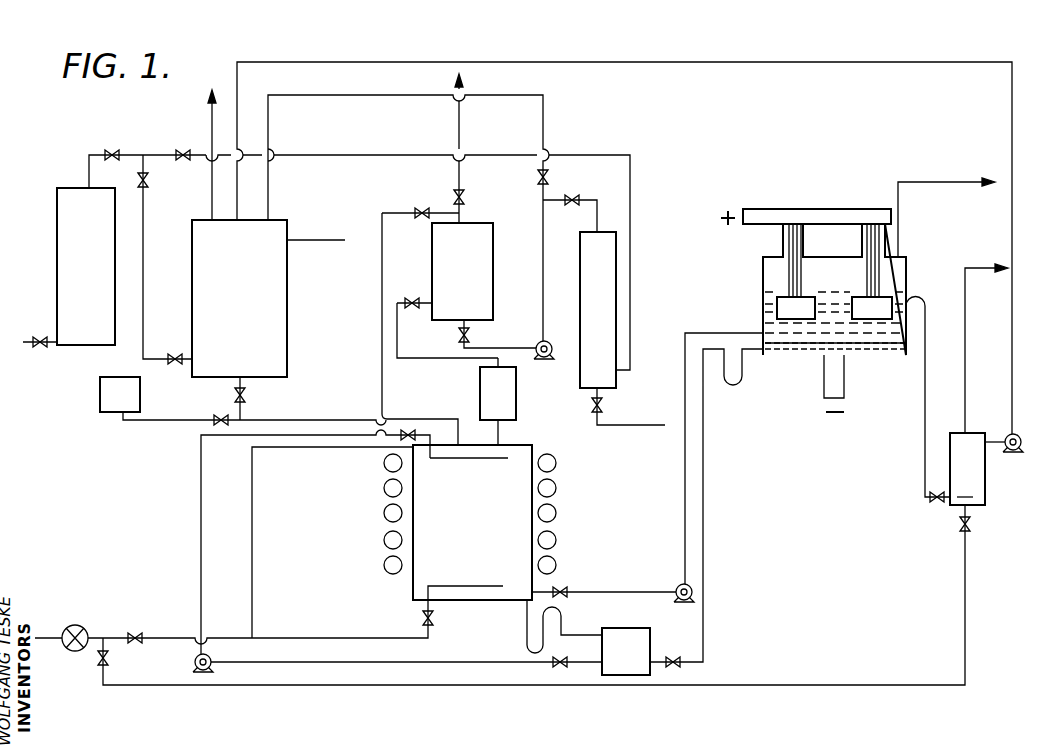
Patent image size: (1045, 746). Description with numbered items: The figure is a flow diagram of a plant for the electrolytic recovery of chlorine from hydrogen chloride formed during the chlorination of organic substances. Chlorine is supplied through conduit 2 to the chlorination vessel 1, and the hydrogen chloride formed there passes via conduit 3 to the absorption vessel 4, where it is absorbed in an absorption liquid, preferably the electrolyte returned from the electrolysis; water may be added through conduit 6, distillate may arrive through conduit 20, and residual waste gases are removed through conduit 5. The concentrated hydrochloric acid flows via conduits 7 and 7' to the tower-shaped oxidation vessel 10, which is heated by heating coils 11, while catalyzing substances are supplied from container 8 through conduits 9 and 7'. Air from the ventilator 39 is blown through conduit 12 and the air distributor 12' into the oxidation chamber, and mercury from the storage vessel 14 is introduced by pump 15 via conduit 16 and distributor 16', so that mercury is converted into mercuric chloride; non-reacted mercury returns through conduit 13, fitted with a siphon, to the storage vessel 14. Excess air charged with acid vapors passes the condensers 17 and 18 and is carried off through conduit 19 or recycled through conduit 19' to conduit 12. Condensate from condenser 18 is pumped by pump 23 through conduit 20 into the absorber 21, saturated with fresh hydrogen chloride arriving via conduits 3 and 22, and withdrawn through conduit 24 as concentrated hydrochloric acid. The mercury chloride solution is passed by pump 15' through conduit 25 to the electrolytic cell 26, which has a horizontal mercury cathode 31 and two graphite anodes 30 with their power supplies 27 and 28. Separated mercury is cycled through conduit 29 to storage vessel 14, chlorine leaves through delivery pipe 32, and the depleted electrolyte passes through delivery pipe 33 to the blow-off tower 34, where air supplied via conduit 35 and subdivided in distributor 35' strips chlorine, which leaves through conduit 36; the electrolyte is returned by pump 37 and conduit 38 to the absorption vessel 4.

The chlorination vessel 1 is at (57, 258).
The conduit 2 is at (39, 355).
The conduit 3 is at (145, 246).
The absorption vessel 4 is at (287, 298).
The conduit 5 is at (217, 155).
The conduit 6 is at (316, 230).
The conduit 7 is at (248, 398).
The conduit 7' is at (349, 329).
The container 8 is at (100, 390).
The conduit 9 is at (181, 411).
The oxidation vessel 10 is at (472, 522).
The heating coils 11 is at (386, 468).
The conduit 12 is at (234, 622).
The air distributor 12' is at (465, 582).
The conduit 13 is at (589, 620).
The storage vessel 14 is at (645, 633).
The pump 15 is at (397, 661).
The pump 15' is at (676, 584).
The conduit 16 is at (315, 534).
The distributor 16' is at (469, 469).
The condenser 17 is at (512, 405).
The condenser 18 is at (486, 269).
The conduit 19 is at (470, 148).
The conduit 19' is at (420, 203).
The conduit 20 is at (408, 211).
The absorber 21 is at (580, 297).
The conduit 22 is at (418, 250).
The pump 23 is at (546, 364).
The conduit 24 is at (628, 406).
The conduit 25 is at (710, 458).
The electrolytic cell 26 is at (906, 265).
The power supply 27 is at (836, 210).
The power supply 28 is at (848, 383).
The conduit 29 is at (706, 508).
The graphite anodes 30 is at (834, 308).
The mercury cathode 31 is at (806, 353).
The delivery pipe 32 is at (946, 209).
The delivery pipe 33 is at (924, 462).
The blow-off tower 34 is at (985, 495).
The conduit 35 is at (548, 559).
The distributor 35' is at (965, 474).
The conduit 36 is at (986, 337).
The pump 37 is at (1004, 457).
The conduit 38 is at (624, 235).
The ventilator 39 is at (63, 628).